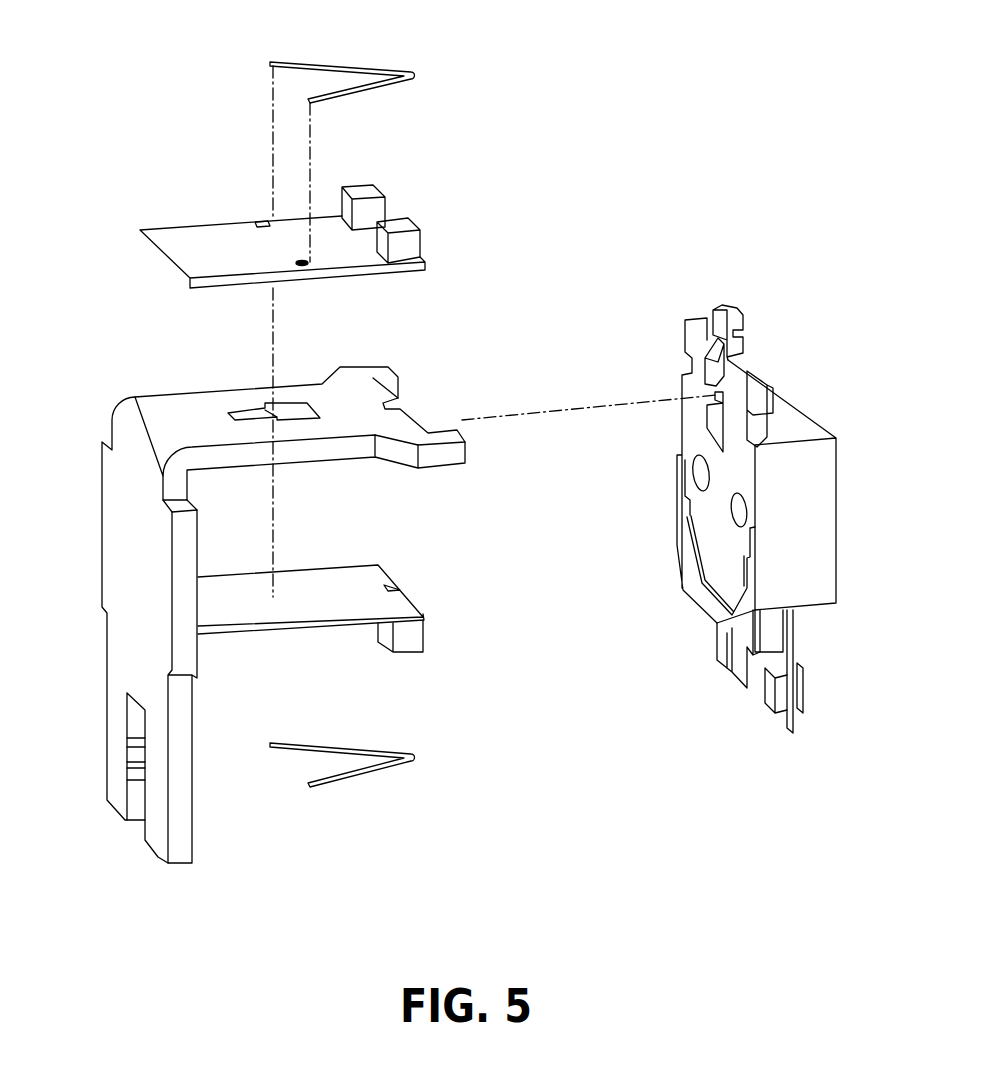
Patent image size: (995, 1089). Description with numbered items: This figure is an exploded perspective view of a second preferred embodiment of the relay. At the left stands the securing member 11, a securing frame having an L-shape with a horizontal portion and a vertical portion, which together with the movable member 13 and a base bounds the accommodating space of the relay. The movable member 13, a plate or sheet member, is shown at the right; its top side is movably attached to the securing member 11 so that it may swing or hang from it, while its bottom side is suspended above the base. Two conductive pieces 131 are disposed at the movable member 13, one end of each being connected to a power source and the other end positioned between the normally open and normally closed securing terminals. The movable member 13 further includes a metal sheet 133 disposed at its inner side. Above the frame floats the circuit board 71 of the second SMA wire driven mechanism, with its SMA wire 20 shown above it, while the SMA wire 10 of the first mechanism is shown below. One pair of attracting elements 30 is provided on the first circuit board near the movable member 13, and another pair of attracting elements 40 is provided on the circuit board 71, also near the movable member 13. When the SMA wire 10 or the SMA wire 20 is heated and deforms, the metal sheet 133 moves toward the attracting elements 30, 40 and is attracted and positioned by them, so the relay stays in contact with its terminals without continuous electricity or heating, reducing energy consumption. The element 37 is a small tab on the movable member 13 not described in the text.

The SMA wire 10 is at (343, 777).
The securing member 11 is at (105, 475).
The movable member 13 is at (818, 510).
The SMA wire 20 is at (347, 67).
The attracting elements 30 is at (418, 642).
The tab 37 is at (713, 367).
The attracting elements 40 is at (373, 187).
The circuit board 71 is at (172, 245).
The conductive pieces 131 is at (800, 643).
The metal sheet 133 is at (713, 532).